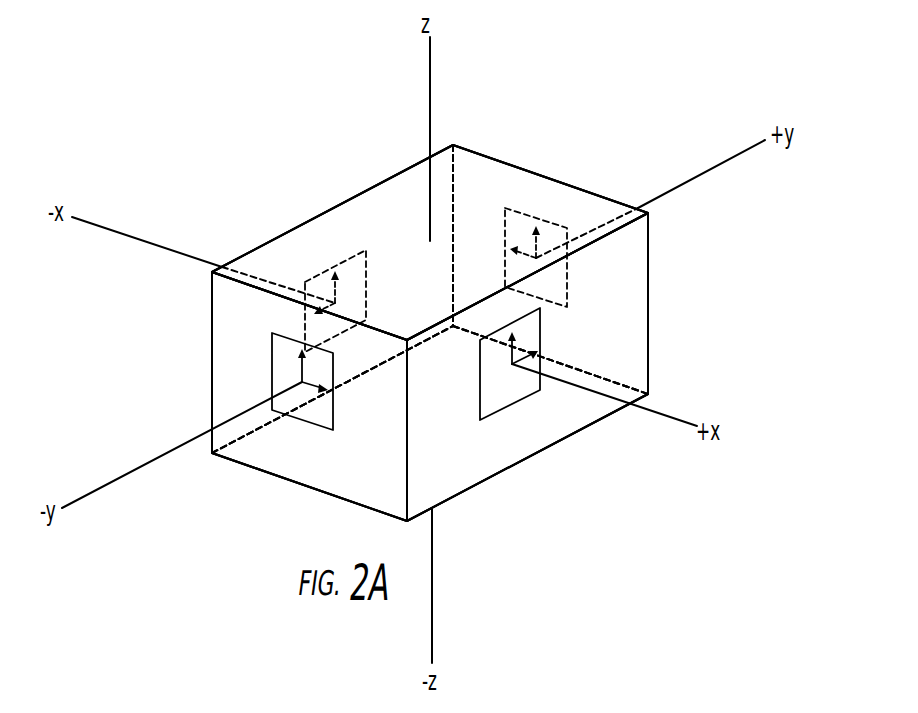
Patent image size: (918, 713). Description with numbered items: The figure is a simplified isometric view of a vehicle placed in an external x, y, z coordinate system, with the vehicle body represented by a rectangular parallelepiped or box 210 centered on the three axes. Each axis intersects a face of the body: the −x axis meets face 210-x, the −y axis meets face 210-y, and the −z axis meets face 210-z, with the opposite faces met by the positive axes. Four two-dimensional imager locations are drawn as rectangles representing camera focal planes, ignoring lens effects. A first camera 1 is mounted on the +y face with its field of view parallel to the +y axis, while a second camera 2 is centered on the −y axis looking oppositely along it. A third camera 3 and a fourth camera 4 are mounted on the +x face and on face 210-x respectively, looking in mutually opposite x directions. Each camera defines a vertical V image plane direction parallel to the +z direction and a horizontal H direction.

The box 210 is at (368, 482).
The -z face 210-z is at (457, 463).
The -x face 210-x is at (290, 261).
The -y face 210-y is at (251, 338).
The first camera 1 is at (549, 243).
The second camera 2 is at (290, 383).
The third camera 3 is at (489, 397).
The fourth camera 4 is at (356, 250).